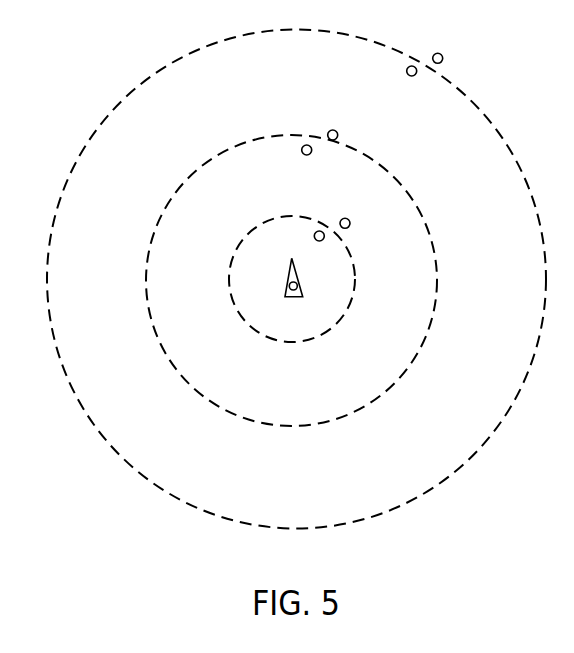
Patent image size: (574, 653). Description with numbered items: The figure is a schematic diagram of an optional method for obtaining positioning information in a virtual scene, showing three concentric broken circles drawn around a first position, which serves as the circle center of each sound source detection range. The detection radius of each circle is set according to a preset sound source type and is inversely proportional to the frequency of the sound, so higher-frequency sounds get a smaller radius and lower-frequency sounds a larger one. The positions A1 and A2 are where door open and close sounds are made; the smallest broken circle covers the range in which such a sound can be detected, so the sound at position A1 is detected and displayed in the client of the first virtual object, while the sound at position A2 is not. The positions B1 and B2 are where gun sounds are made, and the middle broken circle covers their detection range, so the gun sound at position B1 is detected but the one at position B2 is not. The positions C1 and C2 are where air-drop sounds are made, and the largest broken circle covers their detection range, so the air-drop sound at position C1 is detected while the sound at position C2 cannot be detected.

The position where door open and close sound is made A1 is at (330, 251).
The position where door open and close sound is made A2 is at (340, 208).
The position where gun sound is made B1 is at (295, 163).
The position where gun sound is made B2 is at (330, 121).
The position where air-drop sound is made C1 is at (416, 85).
The position where air-drop sound is made C2 is at (451, 45).